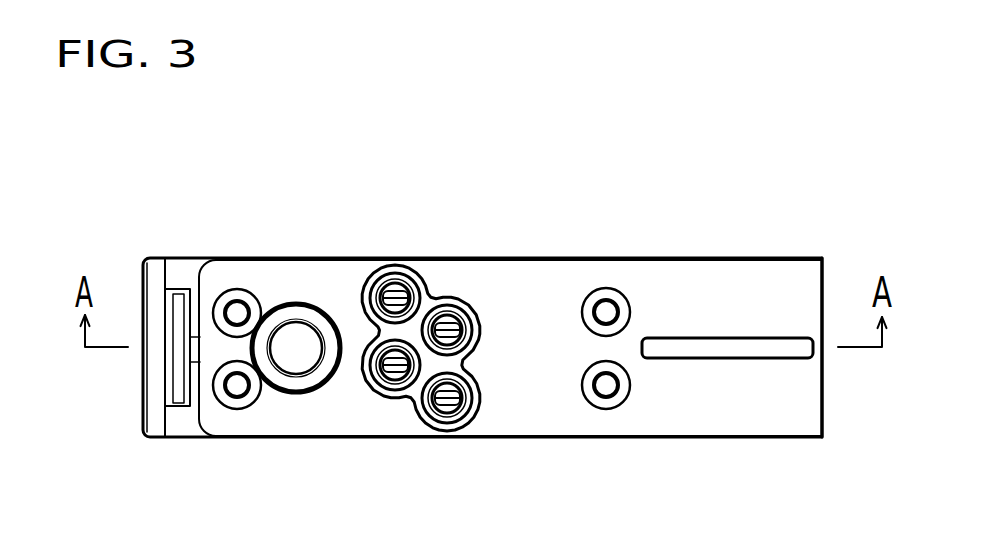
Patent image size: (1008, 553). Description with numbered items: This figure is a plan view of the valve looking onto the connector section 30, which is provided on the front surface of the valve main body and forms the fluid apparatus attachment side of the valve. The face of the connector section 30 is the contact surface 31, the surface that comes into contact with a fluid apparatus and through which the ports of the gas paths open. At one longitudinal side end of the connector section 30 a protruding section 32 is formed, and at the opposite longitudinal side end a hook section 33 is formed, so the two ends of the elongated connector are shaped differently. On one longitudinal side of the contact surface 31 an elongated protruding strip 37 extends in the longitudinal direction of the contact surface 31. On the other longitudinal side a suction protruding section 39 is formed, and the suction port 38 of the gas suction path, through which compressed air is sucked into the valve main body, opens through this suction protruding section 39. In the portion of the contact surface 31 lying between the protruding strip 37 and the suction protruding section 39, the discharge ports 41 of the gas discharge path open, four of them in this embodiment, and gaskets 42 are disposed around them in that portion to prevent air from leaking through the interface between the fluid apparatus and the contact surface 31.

The connector section 30 is at (620, 225).
The contact surface 31 is at (507, 277).
The protruding section 32 is at (835, 267).
The hook section 33 is at (128, 260).
The protruding strip 37 is at (722, 350).
The suction port 38 is at (295, 350).
The suction protruding section 39 is at (305, 383).
The discharge ports 41 is at (447, 328).
The gaskets 42 is at (388, 330).